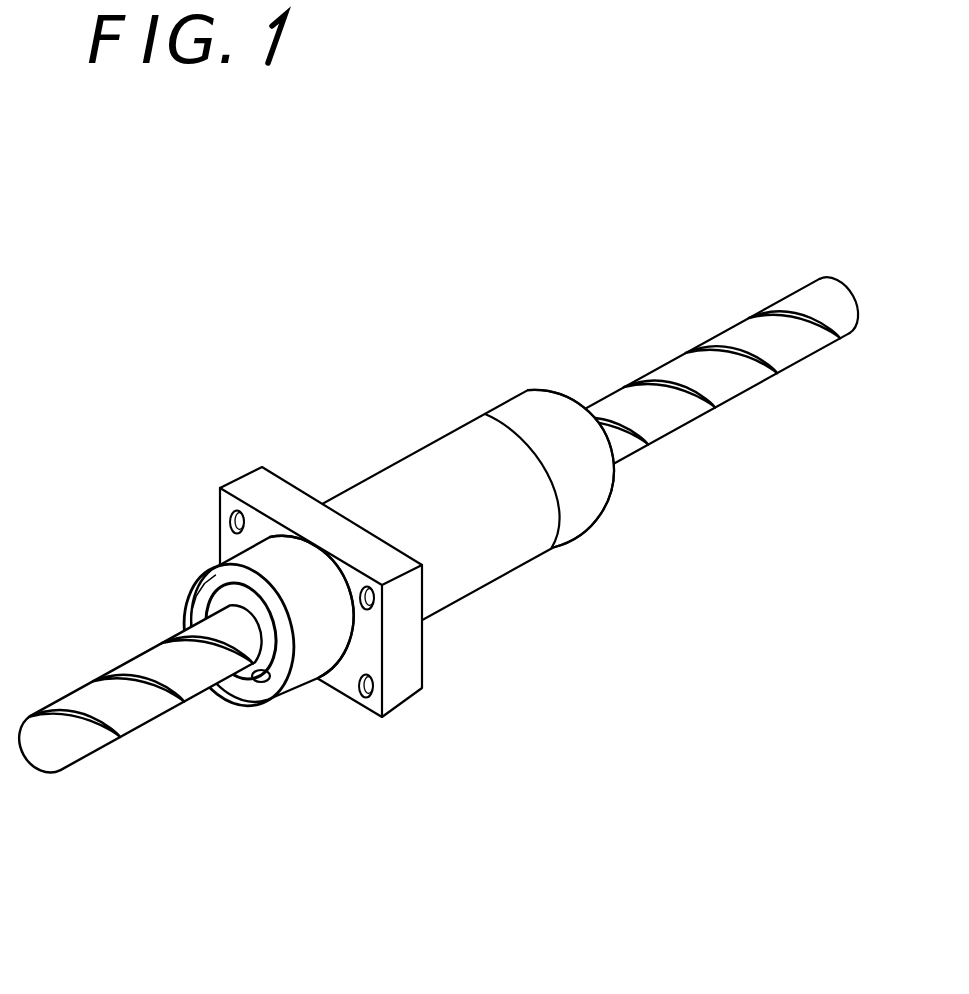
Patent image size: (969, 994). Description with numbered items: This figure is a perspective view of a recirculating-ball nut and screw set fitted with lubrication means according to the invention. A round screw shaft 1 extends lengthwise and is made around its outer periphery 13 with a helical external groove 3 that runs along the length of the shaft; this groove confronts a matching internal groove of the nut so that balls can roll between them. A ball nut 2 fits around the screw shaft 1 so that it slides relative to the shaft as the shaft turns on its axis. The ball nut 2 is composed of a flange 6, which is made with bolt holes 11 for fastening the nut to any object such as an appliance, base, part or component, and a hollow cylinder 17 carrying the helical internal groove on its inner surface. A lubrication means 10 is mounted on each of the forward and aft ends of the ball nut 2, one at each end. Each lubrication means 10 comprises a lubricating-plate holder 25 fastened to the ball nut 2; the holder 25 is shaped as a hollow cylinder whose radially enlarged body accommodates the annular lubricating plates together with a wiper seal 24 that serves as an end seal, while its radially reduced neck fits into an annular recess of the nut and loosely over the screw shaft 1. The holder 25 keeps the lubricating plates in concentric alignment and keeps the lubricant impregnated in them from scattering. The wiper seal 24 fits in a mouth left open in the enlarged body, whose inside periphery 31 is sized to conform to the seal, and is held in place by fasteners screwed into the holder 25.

The screw shaft 1 is at (697, 375).
The ball nut 2 is at (419, 452).
The helical external groove 3 is at (747, 348).
The flange 6 is at (410, 667).
The lubrication means 10 is at (588, 512).
The bolt holes 11 is at (225, 520).
The outer periphery 13 is at (790, 342).
The hollow cylinder 17 is at (500, 552).
The wiper seal 24 is at (217, 600).
The lubricating-plate holder 25 is at (545, 417).
The inside periphery 31 is at (250, 687).